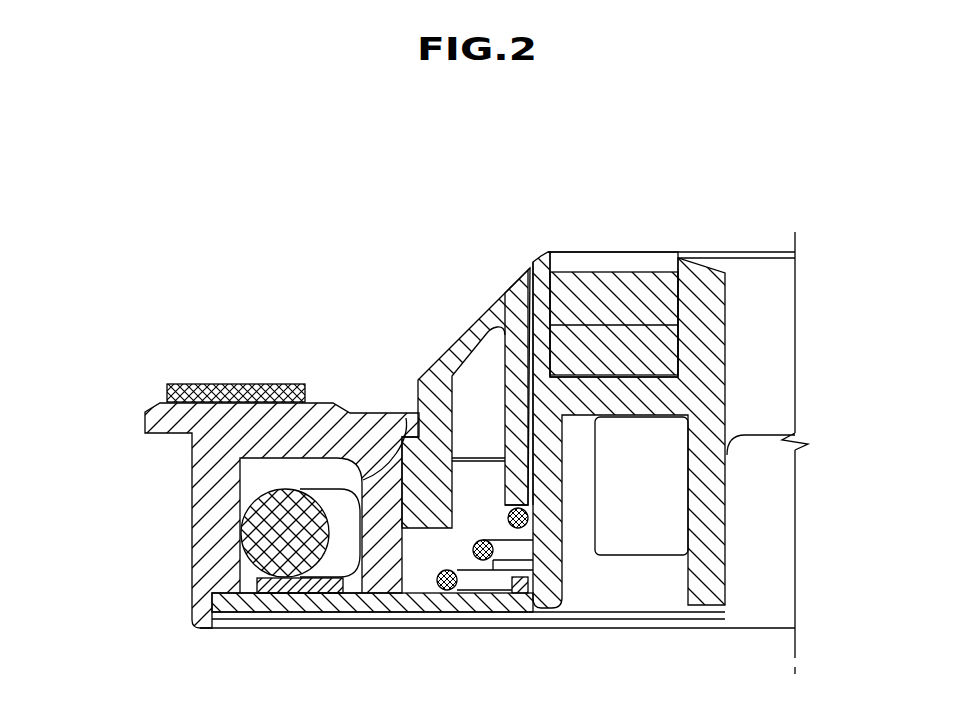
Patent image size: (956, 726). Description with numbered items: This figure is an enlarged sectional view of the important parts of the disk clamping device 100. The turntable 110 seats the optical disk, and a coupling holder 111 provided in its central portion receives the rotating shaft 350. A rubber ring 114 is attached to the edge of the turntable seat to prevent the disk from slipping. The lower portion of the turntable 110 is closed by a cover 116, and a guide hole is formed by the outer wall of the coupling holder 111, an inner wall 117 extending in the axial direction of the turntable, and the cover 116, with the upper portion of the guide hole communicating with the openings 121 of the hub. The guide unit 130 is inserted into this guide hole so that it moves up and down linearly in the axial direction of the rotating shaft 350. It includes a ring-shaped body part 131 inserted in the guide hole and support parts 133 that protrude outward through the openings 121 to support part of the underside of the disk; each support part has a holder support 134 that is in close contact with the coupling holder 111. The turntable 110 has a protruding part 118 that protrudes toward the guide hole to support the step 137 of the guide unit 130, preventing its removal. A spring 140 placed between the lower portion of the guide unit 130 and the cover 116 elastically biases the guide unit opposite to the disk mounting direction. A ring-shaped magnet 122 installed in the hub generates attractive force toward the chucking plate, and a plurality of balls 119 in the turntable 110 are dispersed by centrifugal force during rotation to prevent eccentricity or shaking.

The disk clamping device 100 is at (333, 155).
The turntable 110 is at (165, 514).
The coupling holder 111 is at (553, 552).
The rubber ring 114 is at (255, 385).
The cover 116 is at (272, 613).
The inner wall 117 is at (362, 582).
The protruding part 118 is at (406, 418).
The balls 119 is at (263, 541).
The openings 121 is at (520, 288).
The ring-shaped magnet 122 is at (633, 297).
The guide unit 130 is at (445, 592).
The body part 131 is at (435, 538).
The support parts 133 is at (457, 345).
The holder support 134 is at (535, 328).
The step 137 is at (363, 480).
The spring 140 is at (491, 578).
The rotating shaft 350 is at (778, 530).